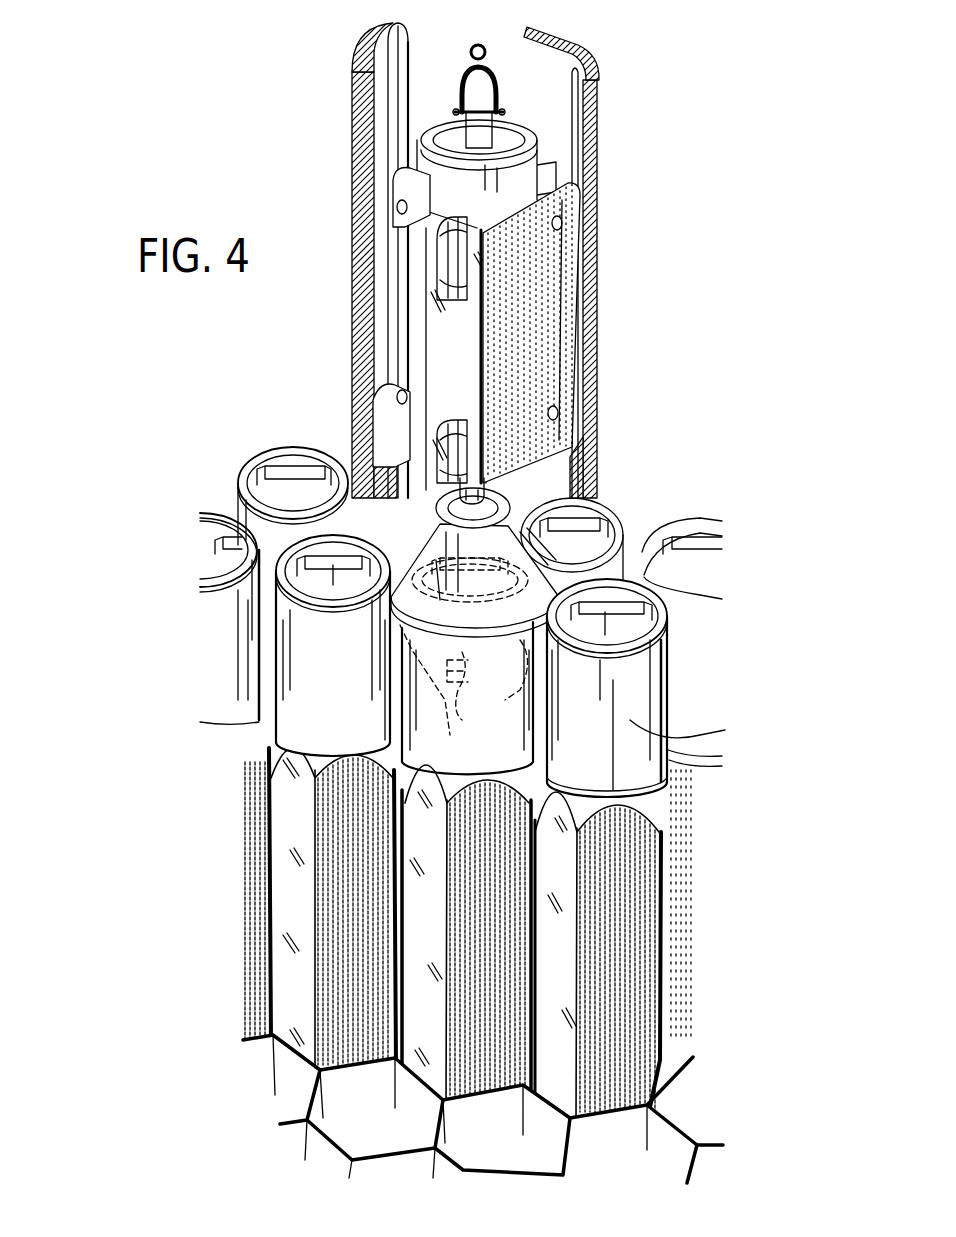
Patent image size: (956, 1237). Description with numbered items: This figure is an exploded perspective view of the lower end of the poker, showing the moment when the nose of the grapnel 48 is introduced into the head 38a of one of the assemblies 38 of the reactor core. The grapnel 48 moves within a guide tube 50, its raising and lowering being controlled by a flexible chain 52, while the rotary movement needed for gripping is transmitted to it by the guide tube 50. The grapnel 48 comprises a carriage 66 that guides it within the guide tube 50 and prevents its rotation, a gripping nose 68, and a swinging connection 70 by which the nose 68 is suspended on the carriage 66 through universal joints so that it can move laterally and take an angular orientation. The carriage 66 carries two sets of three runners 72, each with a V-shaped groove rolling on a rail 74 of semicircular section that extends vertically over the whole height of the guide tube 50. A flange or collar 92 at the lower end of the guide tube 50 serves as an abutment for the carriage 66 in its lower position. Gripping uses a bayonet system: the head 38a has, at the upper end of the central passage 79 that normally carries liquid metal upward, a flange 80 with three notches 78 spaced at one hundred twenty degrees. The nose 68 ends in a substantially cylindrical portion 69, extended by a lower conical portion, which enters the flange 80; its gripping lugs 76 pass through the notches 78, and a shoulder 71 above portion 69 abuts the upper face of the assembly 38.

The assembly 38 is at (623, 928).
The assembly head 38a is at (530, 742).
The grapnel 48 is at (622, 432).
The guide tube 50 is at (478, 259).
The chain 52 is at (490, 52).
The carriage 66 is at (530, 284).
The gripping nose 68 is at (597, 499).
The cylindrical portion 69 is at (400, 645).
The swinging connection 70 is at (488, 480).
The shoulder 71 is at (505, 660).
The runners 72 is at (445, 245).
The rail 74 is at (362, 52).
The gripping lugs 76 is at (450, 702).
The notches 78 is at (400, 621).
The central passage 79 is at (628, 658).
The flange 80 is at (693, 611).
The flange or collar 92 is at (368, 445).